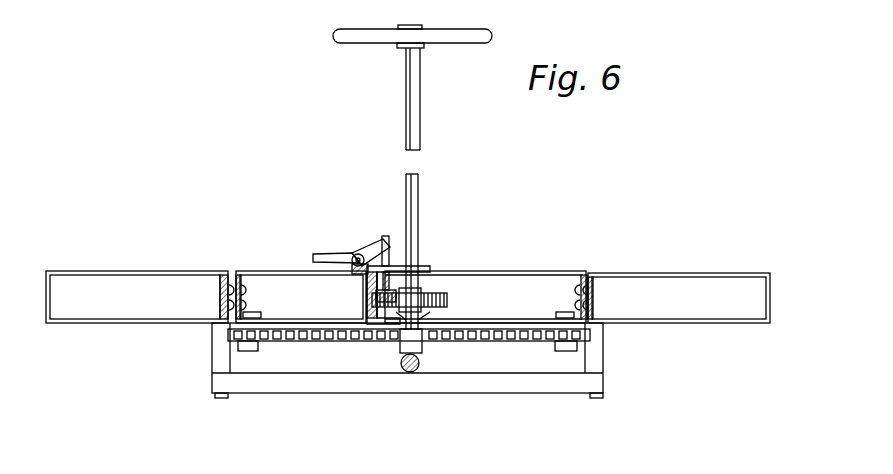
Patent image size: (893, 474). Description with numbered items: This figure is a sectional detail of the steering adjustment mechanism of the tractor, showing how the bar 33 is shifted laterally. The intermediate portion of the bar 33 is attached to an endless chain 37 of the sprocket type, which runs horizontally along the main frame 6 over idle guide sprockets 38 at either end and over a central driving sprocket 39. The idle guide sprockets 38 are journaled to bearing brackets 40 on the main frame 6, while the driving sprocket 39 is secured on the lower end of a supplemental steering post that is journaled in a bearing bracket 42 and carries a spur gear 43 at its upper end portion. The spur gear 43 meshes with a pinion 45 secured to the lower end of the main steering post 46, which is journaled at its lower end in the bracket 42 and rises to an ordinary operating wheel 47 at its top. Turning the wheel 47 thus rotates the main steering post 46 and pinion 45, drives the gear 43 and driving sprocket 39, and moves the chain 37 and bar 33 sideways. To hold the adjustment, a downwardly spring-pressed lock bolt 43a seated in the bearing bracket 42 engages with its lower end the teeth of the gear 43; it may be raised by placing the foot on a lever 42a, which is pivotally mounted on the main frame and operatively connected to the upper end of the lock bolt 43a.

The main frame 6 is at (408, 297).
The bar 33 is at (405, 372).
The endless chain 37 is at (320, 342).
The idle guide sprockets 38 is at (255, 343).
The driving sprocket 39 is at (426, 342).
The bearing brackets 40 is at (566, 322).
The bearing bracket 42 is at (396, 270).
The lever 42a is at (340, 255).
The spur gear 43 is at (448, 300).
The lock bolt 43a is at (387, 262).
The pinion 45 is at (395, 312).
The main steering post 46 is at (418, 147).
The operating wheel 47 is at (462, 36).